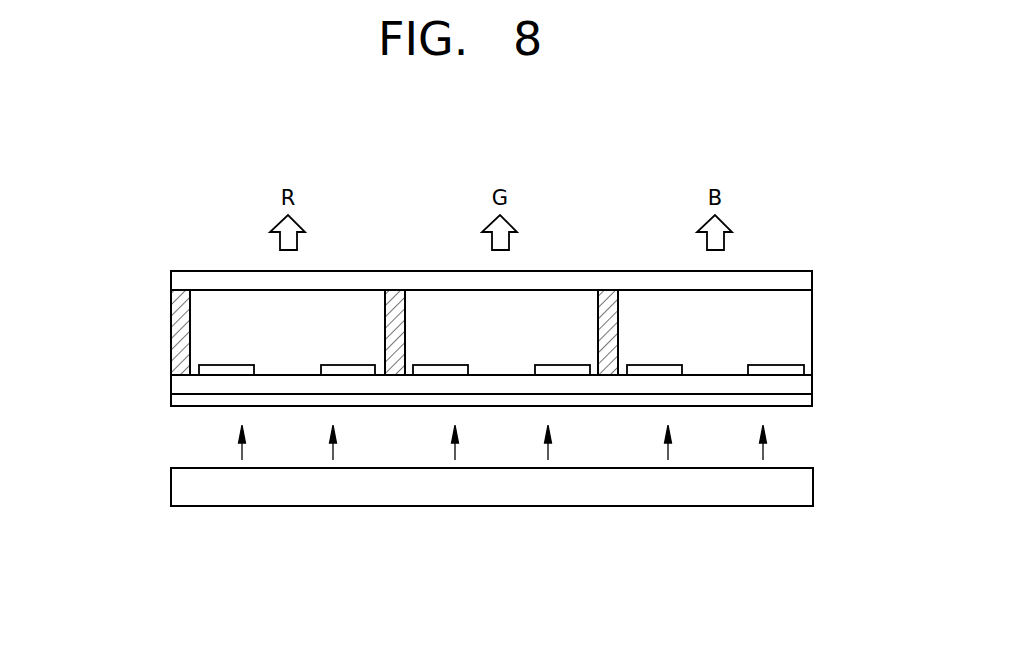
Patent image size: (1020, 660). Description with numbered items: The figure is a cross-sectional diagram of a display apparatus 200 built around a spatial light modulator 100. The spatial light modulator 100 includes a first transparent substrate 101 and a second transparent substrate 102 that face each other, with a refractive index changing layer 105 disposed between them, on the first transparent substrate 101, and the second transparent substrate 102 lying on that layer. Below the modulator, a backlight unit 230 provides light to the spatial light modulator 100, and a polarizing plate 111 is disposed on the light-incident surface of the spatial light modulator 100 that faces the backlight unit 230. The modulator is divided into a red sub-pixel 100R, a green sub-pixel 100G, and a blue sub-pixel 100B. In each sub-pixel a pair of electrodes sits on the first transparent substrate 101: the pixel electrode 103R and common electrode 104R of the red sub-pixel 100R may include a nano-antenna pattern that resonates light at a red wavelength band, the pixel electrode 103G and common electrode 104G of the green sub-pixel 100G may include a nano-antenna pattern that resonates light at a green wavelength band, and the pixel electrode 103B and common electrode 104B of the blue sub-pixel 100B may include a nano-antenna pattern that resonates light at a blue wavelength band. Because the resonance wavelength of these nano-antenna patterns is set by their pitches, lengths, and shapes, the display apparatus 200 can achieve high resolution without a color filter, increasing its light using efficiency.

The spatial light modulator 100 is at (152, 302).
The second transparent substrate 102 is at (807, 281).
The refractive index changing layer 105 is at (802, 332).
The first transparent substrate 101 is at (807, 383).
The polarizing plate 111 is at (803, 403).
The pixel electrode of the red sub-pixel 103R is at (227, 372).
The common electrode of the red sub-pixel 104R is at (340, 372).
The pixel electrode of the green sub-pixel 103G is at (442, 372).
The common electrode of the green sub-pixel 104G is at (555, 372).
The pixel electrode of the blue sub-pixel 103B is at (656, 372).
The common electrode of the blue sub-pixel 104B is at (770, 372).
The red sub-pixel 100R is at (260, 345).
The green sub-pixel 100G is at (531, 345).
The blue sub-pixel 100B is at (746, 345).
The display apparatus 200 is at (530, 491).
The backlight unit 230 is at (805, 488).